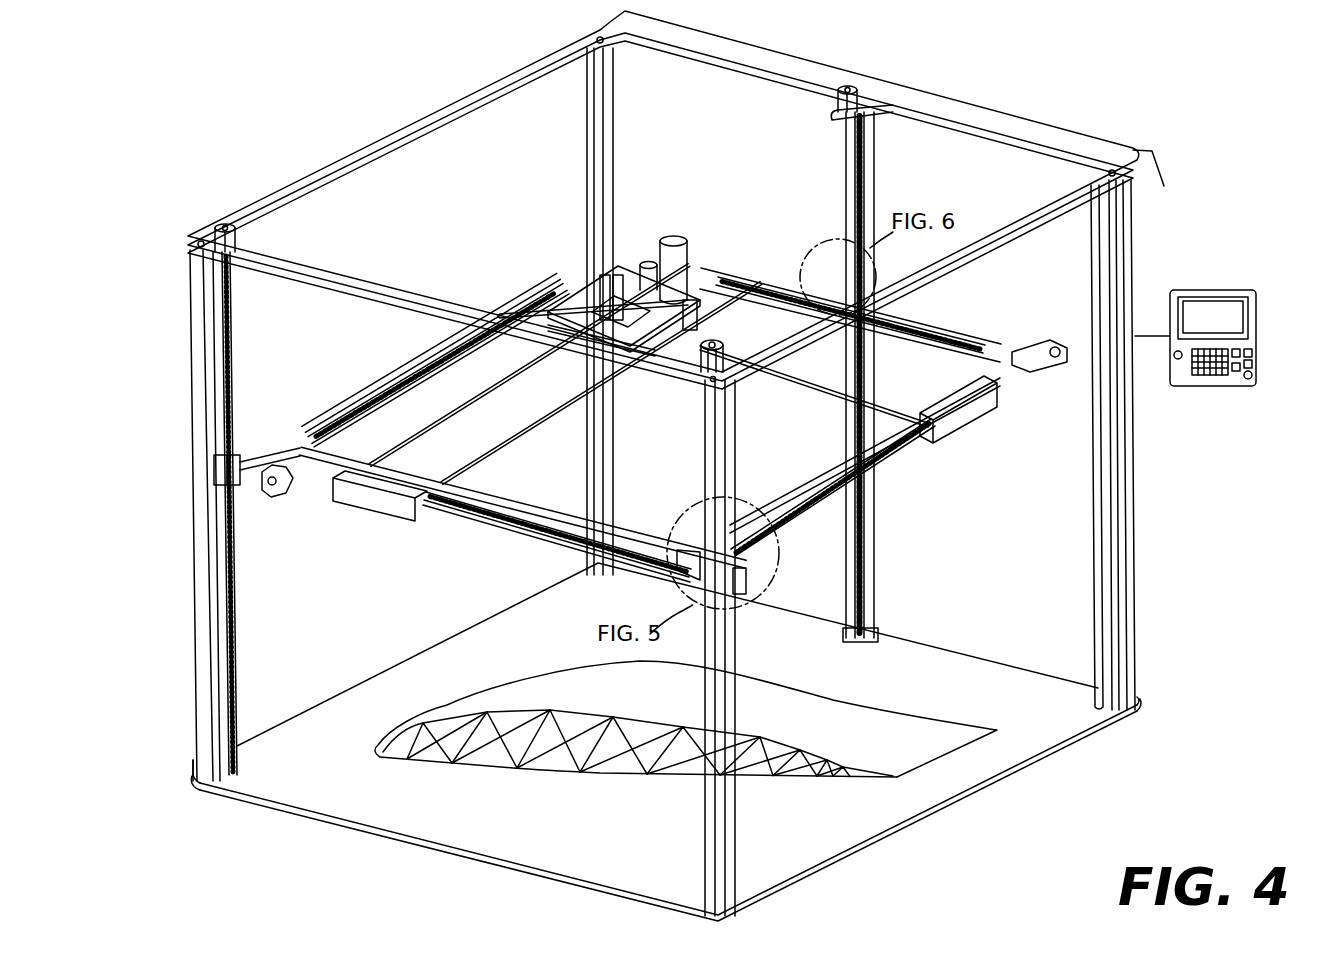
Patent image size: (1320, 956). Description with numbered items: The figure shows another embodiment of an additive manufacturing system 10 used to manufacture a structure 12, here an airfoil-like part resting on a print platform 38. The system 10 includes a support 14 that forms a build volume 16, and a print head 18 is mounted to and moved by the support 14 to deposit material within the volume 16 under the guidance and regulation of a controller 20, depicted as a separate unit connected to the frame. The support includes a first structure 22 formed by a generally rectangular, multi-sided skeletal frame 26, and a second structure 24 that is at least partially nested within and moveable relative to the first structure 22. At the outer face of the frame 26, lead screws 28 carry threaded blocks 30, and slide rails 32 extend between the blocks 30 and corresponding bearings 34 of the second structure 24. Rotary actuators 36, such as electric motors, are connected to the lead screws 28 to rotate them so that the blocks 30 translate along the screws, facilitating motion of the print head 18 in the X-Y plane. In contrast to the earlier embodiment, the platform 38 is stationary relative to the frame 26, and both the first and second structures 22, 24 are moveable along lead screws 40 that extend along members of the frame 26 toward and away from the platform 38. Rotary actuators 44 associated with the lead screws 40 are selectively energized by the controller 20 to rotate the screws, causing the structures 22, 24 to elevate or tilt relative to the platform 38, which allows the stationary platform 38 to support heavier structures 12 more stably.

The system 10 is at (152, 193).
The structure 12 is at (555, 762).
The support 14 is at (440, 108).
The build volume 16 is at (352, 613).
The print head 18 is at (605, 273).
The controller 20 is at (1210, 388).
The first structure 22 is at (980, 103).
The second structure 24 is at (684, 232).
The frame 26 is at (1112, 622).
The lead screws 28 is at (338, 445).
The threaded blocks 30 is at (500, 317).
The slide rails 32 is at (510, 440).
The bearings 34 is at (640, 348).
The rotary actuators 36 is at (275, 493).
The print platform 38 is at (795, 838).
The lead screws 40 is at (866, 190).
The rotary actuators 44 is at (835, 103).